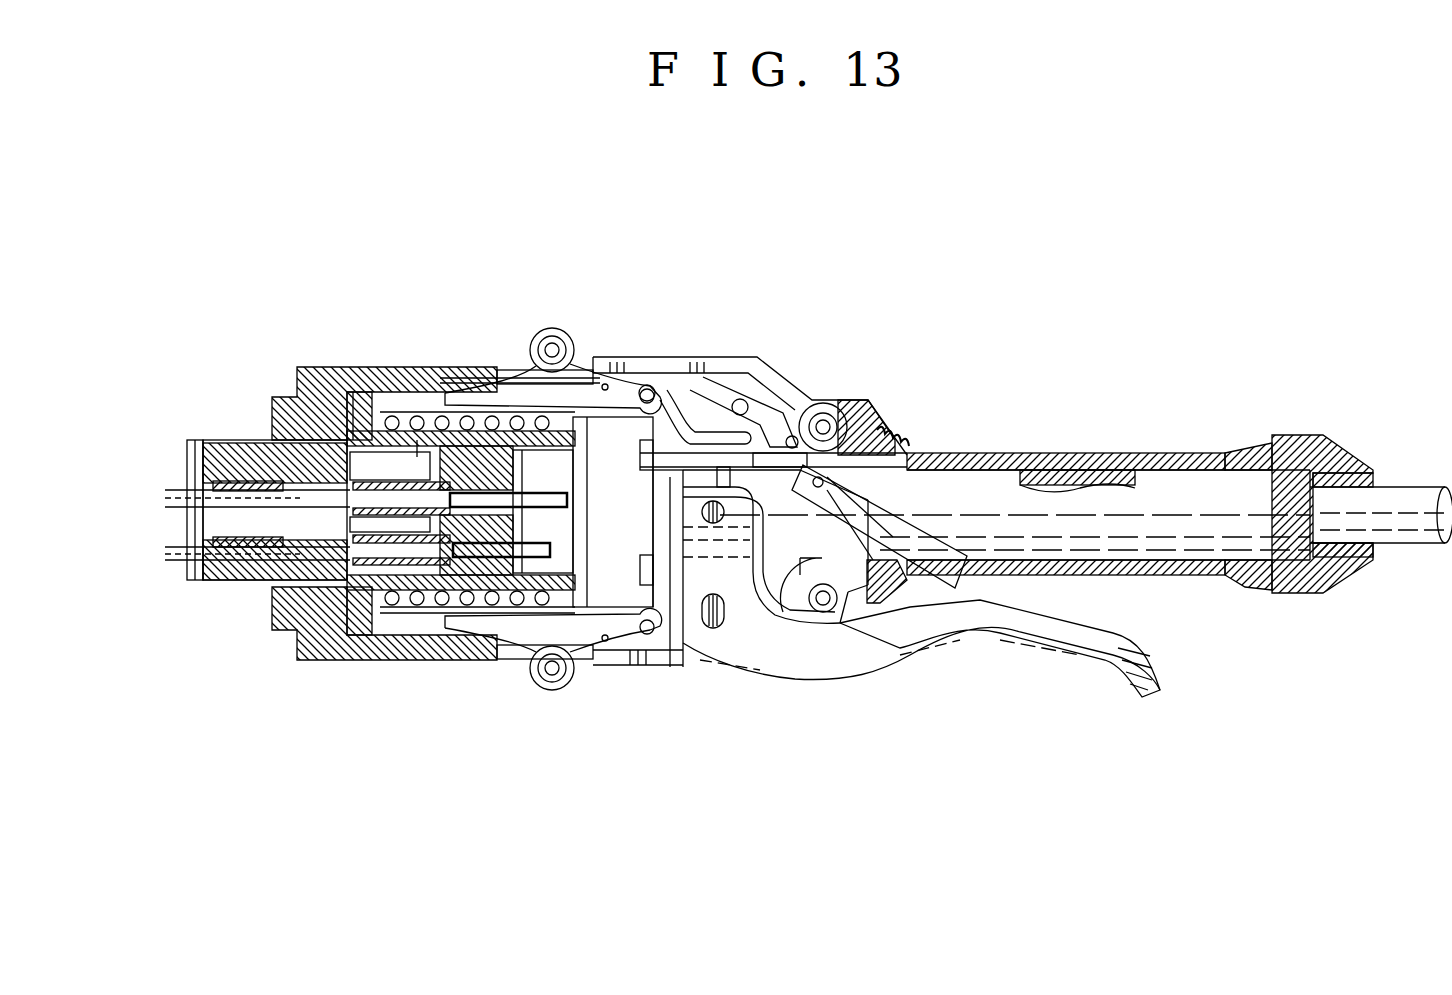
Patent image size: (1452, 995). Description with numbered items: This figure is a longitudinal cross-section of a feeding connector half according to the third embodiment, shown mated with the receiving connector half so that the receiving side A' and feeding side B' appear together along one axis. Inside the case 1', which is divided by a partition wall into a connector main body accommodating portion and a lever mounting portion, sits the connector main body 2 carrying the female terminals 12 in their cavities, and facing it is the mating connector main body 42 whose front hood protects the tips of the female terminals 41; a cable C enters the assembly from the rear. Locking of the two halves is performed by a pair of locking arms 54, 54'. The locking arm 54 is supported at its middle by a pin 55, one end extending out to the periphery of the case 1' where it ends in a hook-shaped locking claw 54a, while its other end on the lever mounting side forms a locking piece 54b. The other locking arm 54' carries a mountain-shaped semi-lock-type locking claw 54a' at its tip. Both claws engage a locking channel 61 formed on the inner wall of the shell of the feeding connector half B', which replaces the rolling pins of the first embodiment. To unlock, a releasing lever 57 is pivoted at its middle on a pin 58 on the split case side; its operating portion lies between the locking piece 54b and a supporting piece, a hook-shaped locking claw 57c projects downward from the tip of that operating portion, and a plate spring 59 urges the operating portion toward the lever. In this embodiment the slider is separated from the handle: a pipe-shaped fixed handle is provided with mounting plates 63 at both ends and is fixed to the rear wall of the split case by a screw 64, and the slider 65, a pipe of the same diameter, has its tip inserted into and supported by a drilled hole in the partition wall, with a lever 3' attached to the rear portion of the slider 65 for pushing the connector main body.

The feeding connector half B' is at (230, 298).
The female terminal 41 is at (287, 470).
The connector main body 42 is at (257, 573).
The female terminal 12 is at (380, 377).
The locking channel 61 is at (443, 373).
The hook-shaped locking claw 54a is at (461, 397).
The locking arm 54 is at (550, 347).
The pin 55 is at (650, 393).
The case 1' is at (751, 349).
The locking piece 54b is at (753, 380).
The plate spring 59 is at (797, 397).
The receiving connector half A' is at (1113, 366).
The cable C is at (1413, 500).
The hook-shaped locking claw 57c is at (693, 501).
The pin 58 is at (880, 500).
The releasing lever 57 is at (930, 525).
The slider 65 is at (693, 640).
The screw 64 is at (790, 620).
The mounting plate 63 is at (850, 620).
The lever 3' is at (921, 682).
The mountain-shaped semi-lock-type locking claw 54a' is at (461, 633).
The connector main body 2 is at (497, 640).
The locking arm 54' is at (553, 678).